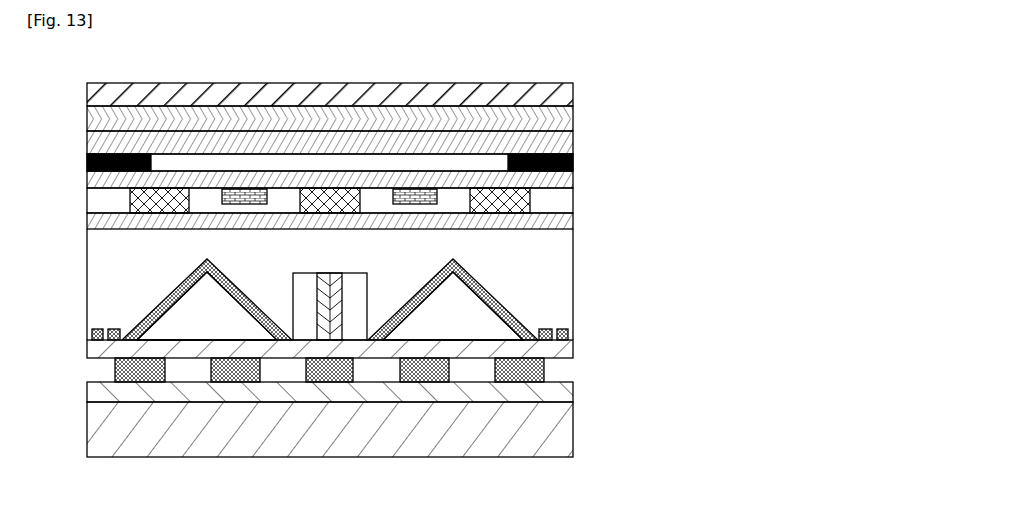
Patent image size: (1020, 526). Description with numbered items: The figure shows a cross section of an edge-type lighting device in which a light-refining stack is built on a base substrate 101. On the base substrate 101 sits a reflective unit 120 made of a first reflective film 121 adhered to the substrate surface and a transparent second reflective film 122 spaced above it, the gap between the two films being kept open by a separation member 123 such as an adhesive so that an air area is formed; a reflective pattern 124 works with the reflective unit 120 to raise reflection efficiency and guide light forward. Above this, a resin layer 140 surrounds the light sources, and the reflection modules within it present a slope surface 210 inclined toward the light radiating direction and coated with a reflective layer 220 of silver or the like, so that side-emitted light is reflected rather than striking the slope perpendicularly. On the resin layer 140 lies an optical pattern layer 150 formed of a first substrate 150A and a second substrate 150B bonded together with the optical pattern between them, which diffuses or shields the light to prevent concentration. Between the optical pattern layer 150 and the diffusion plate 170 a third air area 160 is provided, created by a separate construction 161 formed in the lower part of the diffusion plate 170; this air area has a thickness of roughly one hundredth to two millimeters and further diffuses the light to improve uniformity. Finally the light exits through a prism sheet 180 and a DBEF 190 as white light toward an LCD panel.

The base substrate 101 is at (575, 425).
The reflective unit 120 is at (387, 373).
The first reflective film 121 is at (575, 397).
The second reflective film 122 is at (553, 368).
The separation member 123 is at (560, 380).
The reflective pattern 124 is at (575, 346).
The resin layer 140 is at (562, 276).
The optical pattern layer 150 is at (396, 196).
The first substrate 150A is at (575, 182).
The second substrate 150B is at (575, 224).
The third air area 160 is at (450, 163).
The separate construction 161 is at (575, 163).
The diffusion plate 170 is at (575, 142).
The prism sheet 180 is at (575, 118).
The DBEF 190 is at (567, 92).
The slope surface 210 is at (167, 317).
The reflective layer 220 is at (168, 290).